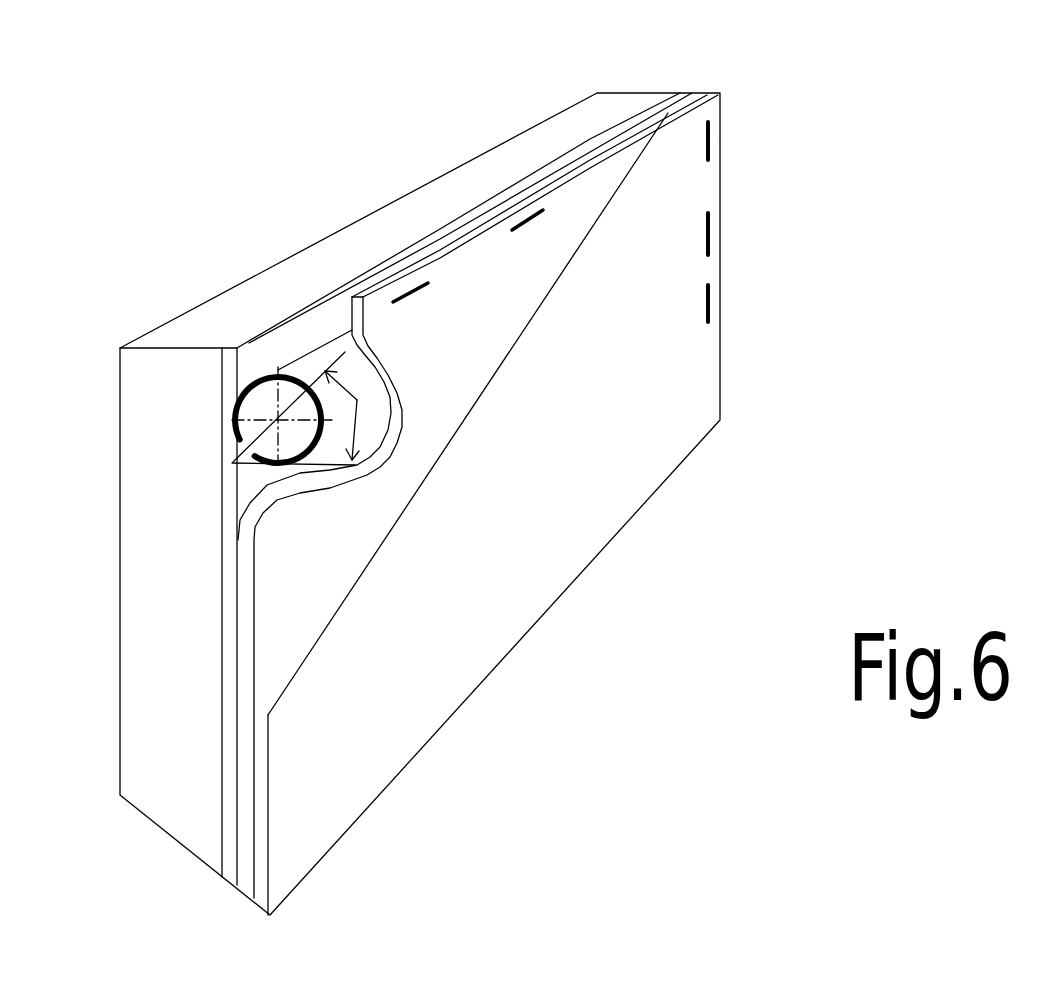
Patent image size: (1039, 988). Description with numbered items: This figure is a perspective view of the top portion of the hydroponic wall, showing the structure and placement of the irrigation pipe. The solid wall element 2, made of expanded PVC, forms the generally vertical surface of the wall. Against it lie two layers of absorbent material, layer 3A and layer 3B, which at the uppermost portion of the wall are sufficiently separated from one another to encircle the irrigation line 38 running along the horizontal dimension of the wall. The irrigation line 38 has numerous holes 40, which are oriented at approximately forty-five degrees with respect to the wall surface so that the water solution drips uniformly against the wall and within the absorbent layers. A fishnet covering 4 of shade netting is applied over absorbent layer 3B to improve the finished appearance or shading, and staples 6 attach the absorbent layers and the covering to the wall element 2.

The wall element 2 is at (487, 180).
The absorbent layer 3A is at (230, 609).
The absorbent layer 3B is at (372, 470).
The fishnet covering 4 is at (681, 191).
The staples 6 is at (702, 230).
The irrigation line 38 is at (325, 362).
The holes 40 is at (357, 400).